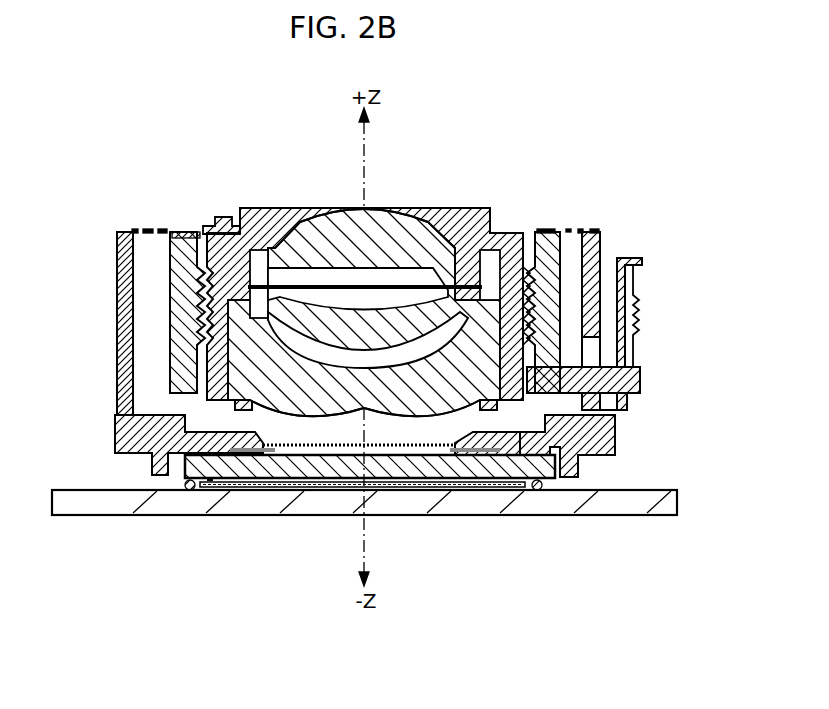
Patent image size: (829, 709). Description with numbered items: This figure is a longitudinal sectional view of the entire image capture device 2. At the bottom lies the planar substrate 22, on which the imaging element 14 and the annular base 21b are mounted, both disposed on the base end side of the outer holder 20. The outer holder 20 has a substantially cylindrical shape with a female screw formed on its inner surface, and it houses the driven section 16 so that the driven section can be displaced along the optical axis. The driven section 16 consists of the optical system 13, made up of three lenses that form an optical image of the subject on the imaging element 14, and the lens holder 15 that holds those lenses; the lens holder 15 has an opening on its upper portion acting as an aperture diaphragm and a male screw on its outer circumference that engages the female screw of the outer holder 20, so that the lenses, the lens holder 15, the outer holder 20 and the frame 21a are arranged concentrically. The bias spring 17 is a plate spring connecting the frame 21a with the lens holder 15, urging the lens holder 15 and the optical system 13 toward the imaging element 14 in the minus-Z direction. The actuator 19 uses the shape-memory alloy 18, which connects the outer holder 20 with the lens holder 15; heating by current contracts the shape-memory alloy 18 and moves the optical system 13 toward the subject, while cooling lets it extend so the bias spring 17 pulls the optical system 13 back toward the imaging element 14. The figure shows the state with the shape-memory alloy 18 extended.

The image capture device 2 is at (78, 150).
The optical system 13 is at (358, 214).
The imaging element 14 is at (465, 482).
The lens holder 15 is at (493, 218).
The driven section 16 is at (376, 279).
The bias spring 17 is at (570, 230).
The shape-memory alloy 18 is at (642, 282).
The actuator 19 is at (687, 289).
The outer holder 20 is at (108, 348).
The frame 21a is at (602, 246).
The annular base 21b is at (118, 433).
The substrate 22 is at (632, 498).